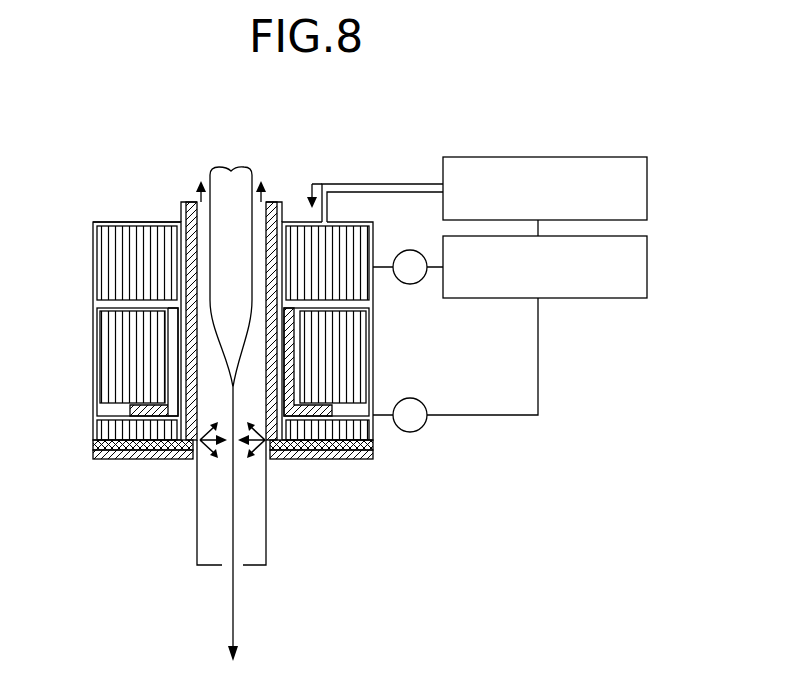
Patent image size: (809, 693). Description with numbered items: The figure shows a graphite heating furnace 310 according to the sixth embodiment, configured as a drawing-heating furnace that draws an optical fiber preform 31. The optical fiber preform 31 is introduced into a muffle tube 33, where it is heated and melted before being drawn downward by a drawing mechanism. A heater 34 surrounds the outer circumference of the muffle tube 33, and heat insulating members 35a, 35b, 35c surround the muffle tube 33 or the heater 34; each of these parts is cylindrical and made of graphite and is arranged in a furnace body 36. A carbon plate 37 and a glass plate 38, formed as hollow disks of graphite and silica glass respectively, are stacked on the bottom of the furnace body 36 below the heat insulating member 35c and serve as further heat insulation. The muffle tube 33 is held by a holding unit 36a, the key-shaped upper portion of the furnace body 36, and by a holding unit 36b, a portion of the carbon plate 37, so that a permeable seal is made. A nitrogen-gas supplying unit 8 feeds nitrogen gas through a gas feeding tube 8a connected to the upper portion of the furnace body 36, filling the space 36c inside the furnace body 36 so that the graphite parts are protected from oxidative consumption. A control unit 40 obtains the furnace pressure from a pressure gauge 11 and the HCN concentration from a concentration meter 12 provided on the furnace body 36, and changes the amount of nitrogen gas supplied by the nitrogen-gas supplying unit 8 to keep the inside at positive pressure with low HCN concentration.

The graphite heating furnace 310 is at (313, 140).
The optical fiber preform 31 is at (229, 167).
The muffle tube 33 is at (182, 204).
The heater 34 is at (132, 407).
The heat insulating member 35a is at (97, 256).
The heat insulating member 35b is at (97, 337).
The heat insulating member 35c is at (97, 428).
The furnace body 36 is at (95, 298).
The holding unit 36a is at (191, 201).
The holding unit 36b is at (193, 447).
The space 36c is at (93, 222).
The carbon plate 37 is at (373, 443).
The glass plate 38 is at (373, 453).
The nitrogen-gas supplying unit 8 is at (647, 190).
The gas feeding tube 8a is at (357, 184).
The pressure gauge 11 is at (410, 250).
The concentration meter 12 is at (410, 398).
The control unit 40 is at (647, 267).